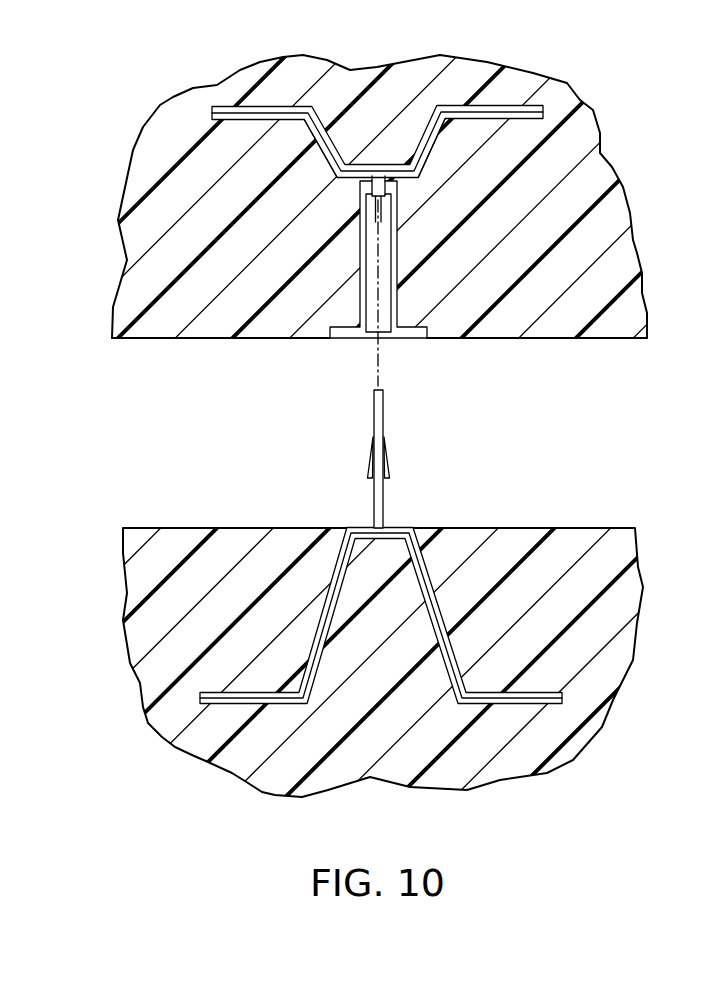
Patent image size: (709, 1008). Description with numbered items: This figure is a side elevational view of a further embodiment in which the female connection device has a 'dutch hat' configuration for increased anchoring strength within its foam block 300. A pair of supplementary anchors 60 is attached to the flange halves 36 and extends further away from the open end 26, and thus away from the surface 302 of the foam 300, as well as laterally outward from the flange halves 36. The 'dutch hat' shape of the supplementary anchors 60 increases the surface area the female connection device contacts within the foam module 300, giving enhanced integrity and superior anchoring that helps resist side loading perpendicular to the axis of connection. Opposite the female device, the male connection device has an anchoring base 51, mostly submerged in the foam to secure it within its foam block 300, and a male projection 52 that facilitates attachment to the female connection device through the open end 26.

The foam block 300 is at (645, 302).
The surface of the foam 302 is at (561, 340).
The supplementary anchors 60 is at (248, 105).
The flange halves 36 is at (347, 166).
The open end 26 is at (379, 340).
The male projection 52 is at (386, 494).
The anchoring base 51 is at (400, 528).